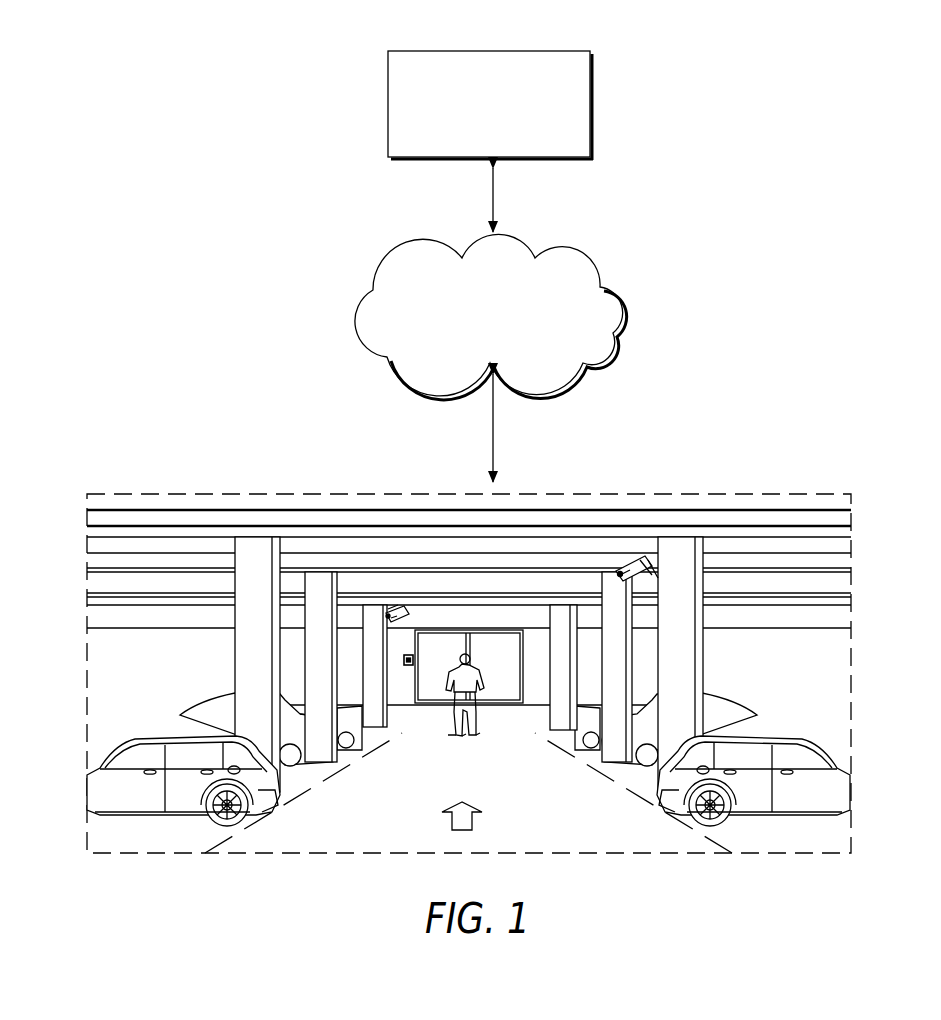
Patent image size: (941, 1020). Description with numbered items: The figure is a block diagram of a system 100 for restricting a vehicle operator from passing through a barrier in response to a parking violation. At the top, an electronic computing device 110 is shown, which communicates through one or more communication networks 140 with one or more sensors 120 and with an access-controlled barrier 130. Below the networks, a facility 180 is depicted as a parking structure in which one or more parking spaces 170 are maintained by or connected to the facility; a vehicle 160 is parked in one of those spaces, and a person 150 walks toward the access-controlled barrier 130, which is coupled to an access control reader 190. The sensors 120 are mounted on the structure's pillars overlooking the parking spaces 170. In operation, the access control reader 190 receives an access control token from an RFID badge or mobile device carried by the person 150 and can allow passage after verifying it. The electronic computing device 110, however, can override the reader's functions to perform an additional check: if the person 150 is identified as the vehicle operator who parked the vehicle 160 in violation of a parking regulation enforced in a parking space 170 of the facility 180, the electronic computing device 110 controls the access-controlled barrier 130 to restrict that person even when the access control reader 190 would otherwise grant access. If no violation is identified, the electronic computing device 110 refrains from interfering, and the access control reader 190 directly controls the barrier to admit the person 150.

The system 100 is at (157, 59).
The electronic computing device 110 is at (483, 51).
The sensor 120 is at (388, 608).
The access-controlled barrier 130 is at (433, 655).
The communication network 140 is at (567, 258).
The person 150 is at (477, 715).
The vehicle 160 is at (807, 786).
The parking space 170 is at (758, 840).
The facility 180 is at (520, 493).
The access control reader 190 is at (404, 656).